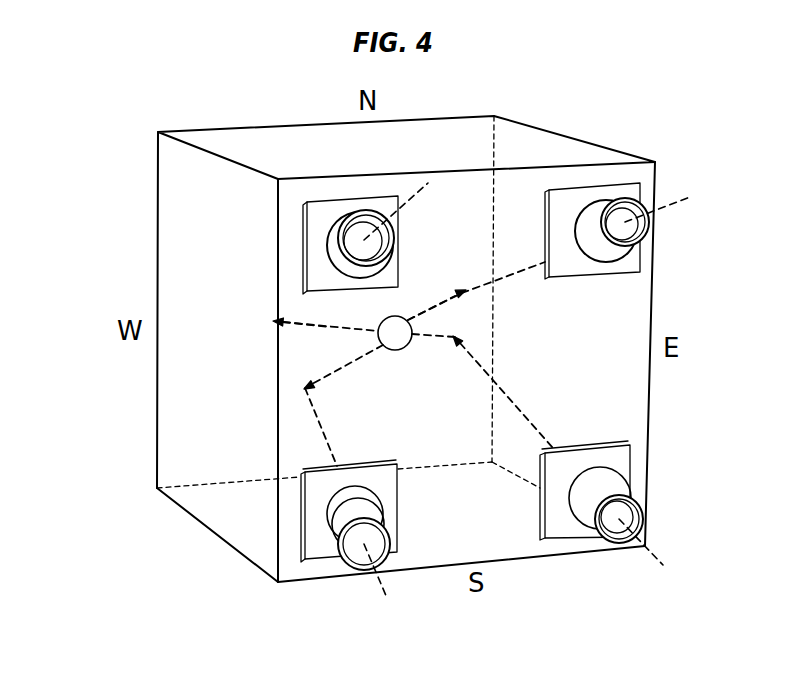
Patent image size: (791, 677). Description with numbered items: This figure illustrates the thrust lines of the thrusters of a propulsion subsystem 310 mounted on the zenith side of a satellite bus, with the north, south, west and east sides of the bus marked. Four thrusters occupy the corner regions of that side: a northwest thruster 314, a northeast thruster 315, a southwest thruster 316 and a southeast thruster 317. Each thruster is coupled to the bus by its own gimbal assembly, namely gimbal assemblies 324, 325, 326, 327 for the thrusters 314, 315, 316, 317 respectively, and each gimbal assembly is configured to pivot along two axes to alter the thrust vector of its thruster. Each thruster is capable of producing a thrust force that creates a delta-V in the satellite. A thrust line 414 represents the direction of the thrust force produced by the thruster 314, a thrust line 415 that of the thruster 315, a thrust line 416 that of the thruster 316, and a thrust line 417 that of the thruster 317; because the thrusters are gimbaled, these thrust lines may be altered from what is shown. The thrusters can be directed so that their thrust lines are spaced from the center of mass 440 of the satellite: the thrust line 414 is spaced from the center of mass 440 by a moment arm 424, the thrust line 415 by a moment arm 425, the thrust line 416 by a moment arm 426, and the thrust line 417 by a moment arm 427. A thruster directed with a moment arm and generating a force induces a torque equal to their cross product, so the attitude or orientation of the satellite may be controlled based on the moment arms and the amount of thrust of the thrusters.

The propulsion subsystem 310 is at (617, 595).
The northwest thruster 314 is at (350, 216).
The northeast thruster 315 is at (637, 238).
The southwest thruster 316 is at (378, 514).
The southeast thruster 317 is at (615, 490).
The gimbal assembly 324 is at (318, 224).
The gimbal assembly 325 is at (625, 270).
The gimbal assembly 326 is at (318, 548).
The gimbal assembly 327 is at (562, 527).
The thrust line 414 is at (297, 306).
The thrust line 415 is at (512, 270).
The thrust line 416 is at (325, 437).
The thrust line 417 is at (508, 398).
The moment arm 424 is at (338, 333).
The moment arm 425 is at (426, 316).
The moment arm 426 is at (338, 368).
The moment arm 427 is at (438, 334).
The center of mass 440 is at (404, 347).